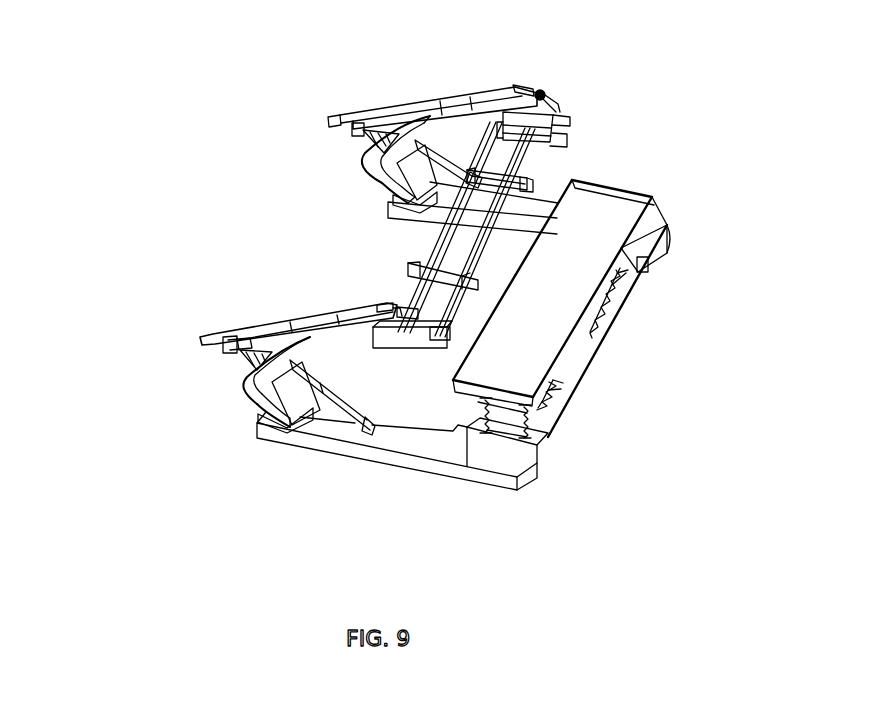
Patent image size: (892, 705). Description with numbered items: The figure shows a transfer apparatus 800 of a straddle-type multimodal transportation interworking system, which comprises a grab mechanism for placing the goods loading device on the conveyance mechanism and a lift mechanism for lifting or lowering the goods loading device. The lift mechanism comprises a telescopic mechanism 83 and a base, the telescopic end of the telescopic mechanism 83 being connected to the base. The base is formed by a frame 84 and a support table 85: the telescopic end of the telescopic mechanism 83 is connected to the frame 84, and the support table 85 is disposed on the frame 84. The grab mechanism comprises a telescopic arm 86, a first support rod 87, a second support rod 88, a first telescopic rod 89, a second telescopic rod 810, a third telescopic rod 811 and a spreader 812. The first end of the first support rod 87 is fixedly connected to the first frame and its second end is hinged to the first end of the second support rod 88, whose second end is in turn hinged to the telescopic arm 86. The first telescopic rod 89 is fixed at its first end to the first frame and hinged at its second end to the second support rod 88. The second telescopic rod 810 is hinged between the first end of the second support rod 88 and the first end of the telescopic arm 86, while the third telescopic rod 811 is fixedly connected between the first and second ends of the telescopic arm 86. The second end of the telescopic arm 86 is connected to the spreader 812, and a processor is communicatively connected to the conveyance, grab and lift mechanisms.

The telescopic mechanism 83 is at (533, 413).
The frame 84 is at (460, 385).
The support table 85 is at (588, 222).
The telescopic arm 86 is at (253, 340).
The first support rod 87 is at (253, 398).
The second support rod 88 is at (240, 383).
The first telescopic rod 89 is at (323, 400).
The transfer apparatus 800 is at (423, 442).
The second telescopic rod 810 is at (240, 352).
The third telescopic rod 811 is at (220, 337).
The spreader 812 is at (455, 238).